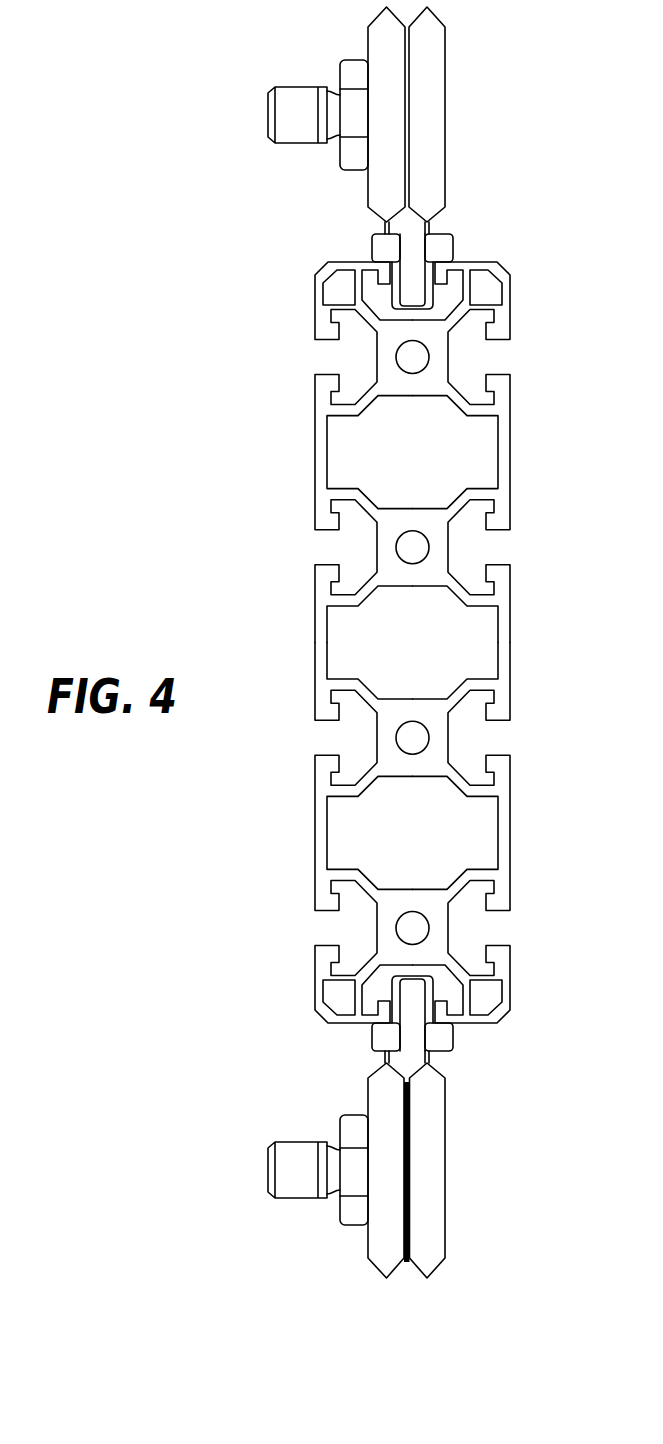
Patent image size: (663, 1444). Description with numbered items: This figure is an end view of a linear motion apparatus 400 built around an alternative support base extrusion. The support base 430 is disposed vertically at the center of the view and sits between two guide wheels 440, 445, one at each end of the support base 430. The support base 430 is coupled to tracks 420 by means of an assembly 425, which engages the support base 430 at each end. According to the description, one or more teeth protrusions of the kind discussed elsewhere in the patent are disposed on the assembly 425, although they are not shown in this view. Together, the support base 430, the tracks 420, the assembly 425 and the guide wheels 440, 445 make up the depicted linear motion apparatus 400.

The linear motion apparatus 400 is at (254, 40).
The tracks 420 is at (413, 260).
The assembly 425 is at (453, 250).
The support base 430 is at (510, 643).
The guide wheel 440 is at (445, 1172).
The guide wheel 445 is at (445, 118).